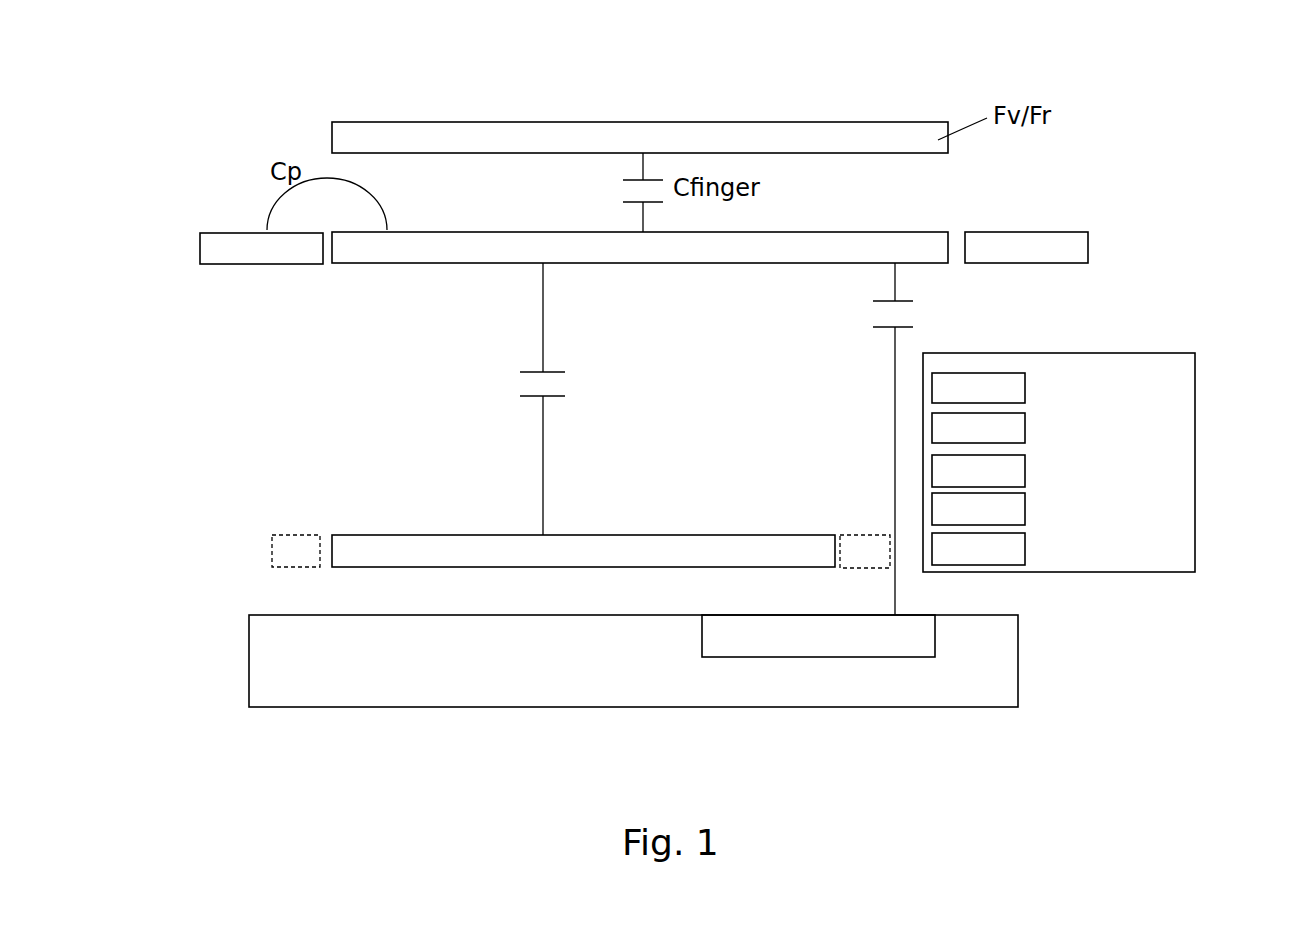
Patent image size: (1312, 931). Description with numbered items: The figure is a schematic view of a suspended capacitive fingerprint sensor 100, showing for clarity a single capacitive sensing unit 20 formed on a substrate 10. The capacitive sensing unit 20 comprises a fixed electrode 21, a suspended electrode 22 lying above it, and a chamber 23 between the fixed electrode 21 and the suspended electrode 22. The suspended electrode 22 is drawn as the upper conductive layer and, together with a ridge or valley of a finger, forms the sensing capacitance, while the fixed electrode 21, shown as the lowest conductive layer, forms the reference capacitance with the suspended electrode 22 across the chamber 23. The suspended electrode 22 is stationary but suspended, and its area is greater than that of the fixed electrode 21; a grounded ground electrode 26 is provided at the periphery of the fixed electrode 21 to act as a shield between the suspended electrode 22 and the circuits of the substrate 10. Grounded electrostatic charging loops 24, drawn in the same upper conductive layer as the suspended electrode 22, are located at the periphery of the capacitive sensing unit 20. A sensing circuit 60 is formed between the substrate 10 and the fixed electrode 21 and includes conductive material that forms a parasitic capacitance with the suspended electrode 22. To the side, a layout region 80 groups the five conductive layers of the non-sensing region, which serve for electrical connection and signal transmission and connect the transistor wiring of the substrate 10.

The suspended capacitive fingerprint sensor 100 is at (708, 43).
The capacitive sensing unit 20 is at (115, 42).
The fixed electrode 21 is at (412, 547).
The suspended electrode 22 is at (932, 240).
The chamber 23 is at (387, 413).
The electrostatic charging loop 24 is at (218, 253).
The ground electrode 26 is at (282, 553).
The substrate 10 is at (267, 675).
The sensing circuit 60 is at (772, 640).
The layout region 80 is at (1195, 408).